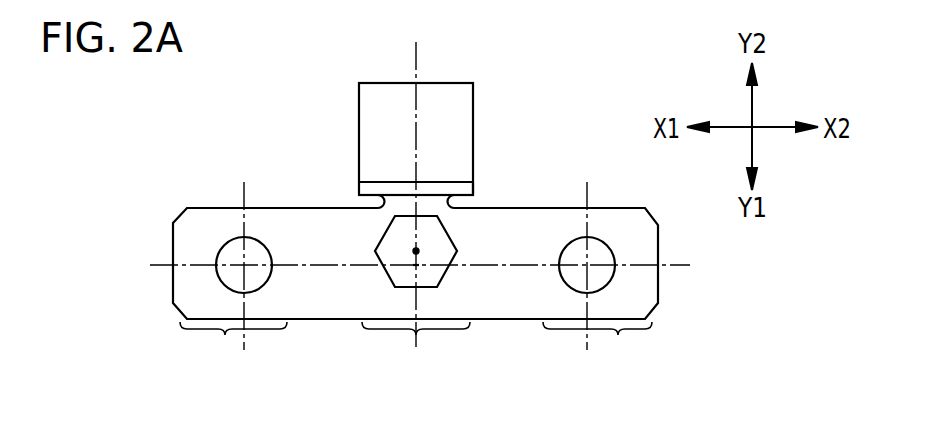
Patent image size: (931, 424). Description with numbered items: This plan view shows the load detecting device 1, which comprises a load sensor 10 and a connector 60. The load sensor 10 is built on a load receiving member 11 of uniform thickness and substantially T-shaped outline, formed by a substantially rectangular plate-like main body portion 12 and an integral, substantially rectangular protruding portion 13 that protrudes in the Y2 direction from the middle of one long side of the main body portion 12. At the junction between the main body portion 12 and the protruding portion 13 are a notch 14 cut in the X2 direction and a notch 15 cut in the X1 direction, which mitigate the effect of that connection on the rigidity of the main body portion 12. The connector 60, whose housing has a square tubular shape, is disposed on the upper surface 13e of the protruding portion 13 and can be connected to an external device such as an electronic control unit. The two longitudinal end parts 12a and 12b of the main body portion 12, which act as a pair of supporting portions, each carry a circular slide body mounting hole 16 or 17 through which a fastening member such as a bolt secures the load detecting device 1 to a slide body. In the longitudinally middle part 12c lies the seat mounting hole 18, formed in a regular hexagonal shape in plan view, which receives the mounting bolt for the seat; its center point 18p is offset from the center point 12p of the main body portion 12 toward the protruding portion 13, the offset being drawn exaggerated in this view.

The load detecting device 1 is at (340, 78).
The load sensor 10 is at (207, 190).
The load receiving member 11 is at (182, 208).
The main body portion 12 is at (186, 300).
The longitudinal end part 12a is at (233, 344).
The longitudinal end part 12b is at (597, 344).
The longitudinally middle part 12c is at (416, 344).
The center point 12p is at (416, 251).
The protruding portion 13 is at (367, 188).
The upper surface 13e is at (473, 178).
The notch 14 is at (370, 195).
The notch 15 is at (462, 192).
The slide body mounting hole 16 is at (258, 242).
The slide body mounting hole 17 is at (608, 246).
The seat mounting hole 18 is at (440, 236).
The center point 18p is at (417, 266).
The connector 60 is at (458, 98).